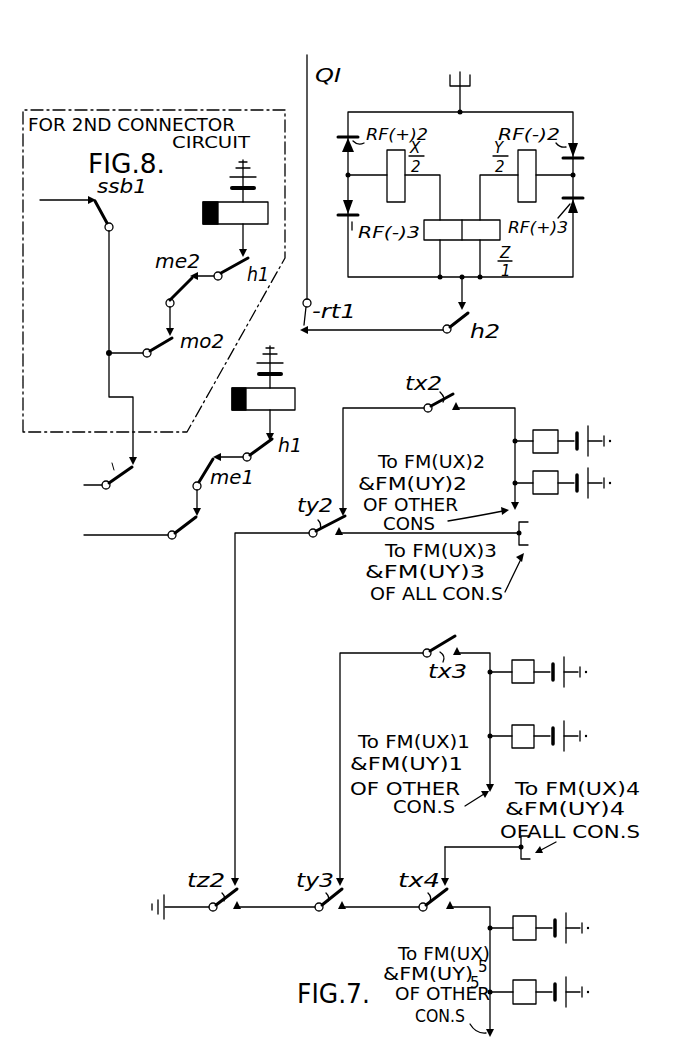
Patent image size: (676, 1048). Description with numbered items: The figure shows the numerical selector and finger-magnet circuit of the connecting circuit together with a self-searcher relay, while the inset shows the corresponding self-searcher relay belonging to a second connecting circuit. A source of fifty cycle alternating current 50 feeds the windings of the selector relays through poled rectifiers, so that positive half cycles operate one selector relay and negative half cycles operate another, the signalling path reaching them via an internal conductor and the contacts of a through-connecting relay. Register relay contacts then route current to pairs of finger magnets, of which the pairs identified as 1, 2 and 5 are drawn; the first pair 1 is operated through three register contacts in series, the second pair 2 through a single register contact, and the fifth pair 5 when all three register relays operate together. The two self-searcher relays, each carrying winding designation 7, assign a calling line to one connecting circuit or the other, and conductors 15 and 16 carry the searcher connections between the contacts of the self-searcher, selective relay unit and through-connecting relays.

In FIG. 8, the terminal 15 (ssa1 contact) 15 is at (96, 465).
In FIG. 7, the terminal 16 (mo1 contact) 16 is at (130, 538).
In FIG. 8, the relay 7 (SSA/SSB) 7 is at (198, 210).
In FIG. 7, the relay 7 (SSA/SSB) 7 is at (342, 393).
In FIG. 7, the source of 50 C./S. alternating current 50 is at (466, 64).
In FIG. 7, the finger magnets FM(UX)1 and FM(UY) 1 is at (549, 701).
In FIG. 7, the finger magnets FM(UX)2 and FM(UY) 2 is at (575, 465).
In FIG. 7, the finger magnets FM(UX)5 and FM(UY) 5 is at (546, 957).